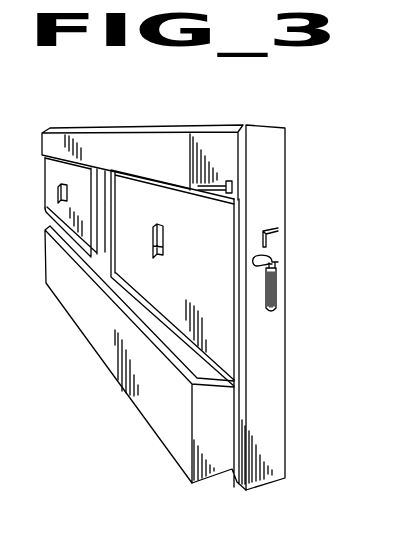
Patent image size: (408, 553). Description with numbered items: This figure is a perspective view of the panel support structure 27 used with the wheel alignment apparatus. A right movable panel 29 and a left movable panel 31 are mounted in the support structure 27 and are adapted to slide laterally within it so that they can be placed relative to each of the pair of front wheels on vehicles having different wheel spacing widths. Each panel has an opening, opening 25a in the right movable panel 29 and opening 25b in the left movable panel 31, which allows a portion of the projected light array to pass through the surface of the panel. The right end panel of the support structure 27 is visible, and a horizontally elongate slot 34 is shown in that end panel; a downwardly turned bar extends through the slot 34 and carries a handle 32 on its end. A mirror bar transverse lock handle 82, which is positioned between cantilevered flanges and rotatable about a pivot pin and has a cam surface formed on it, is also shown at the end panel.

The panel support structure 27 is at (262, 127).
The left movable panel 31 is at (42, 170).
The opening 25b is at (67, 187).
The opening 25a is at (163, 247).
The right movable panel 29 is at (246, 204).
The mirror bar transverse lock handle 82 is at (278, 228).
The horizontally elongate slot 34 is at (278, 259).
The handle 32 is at (276, 297).